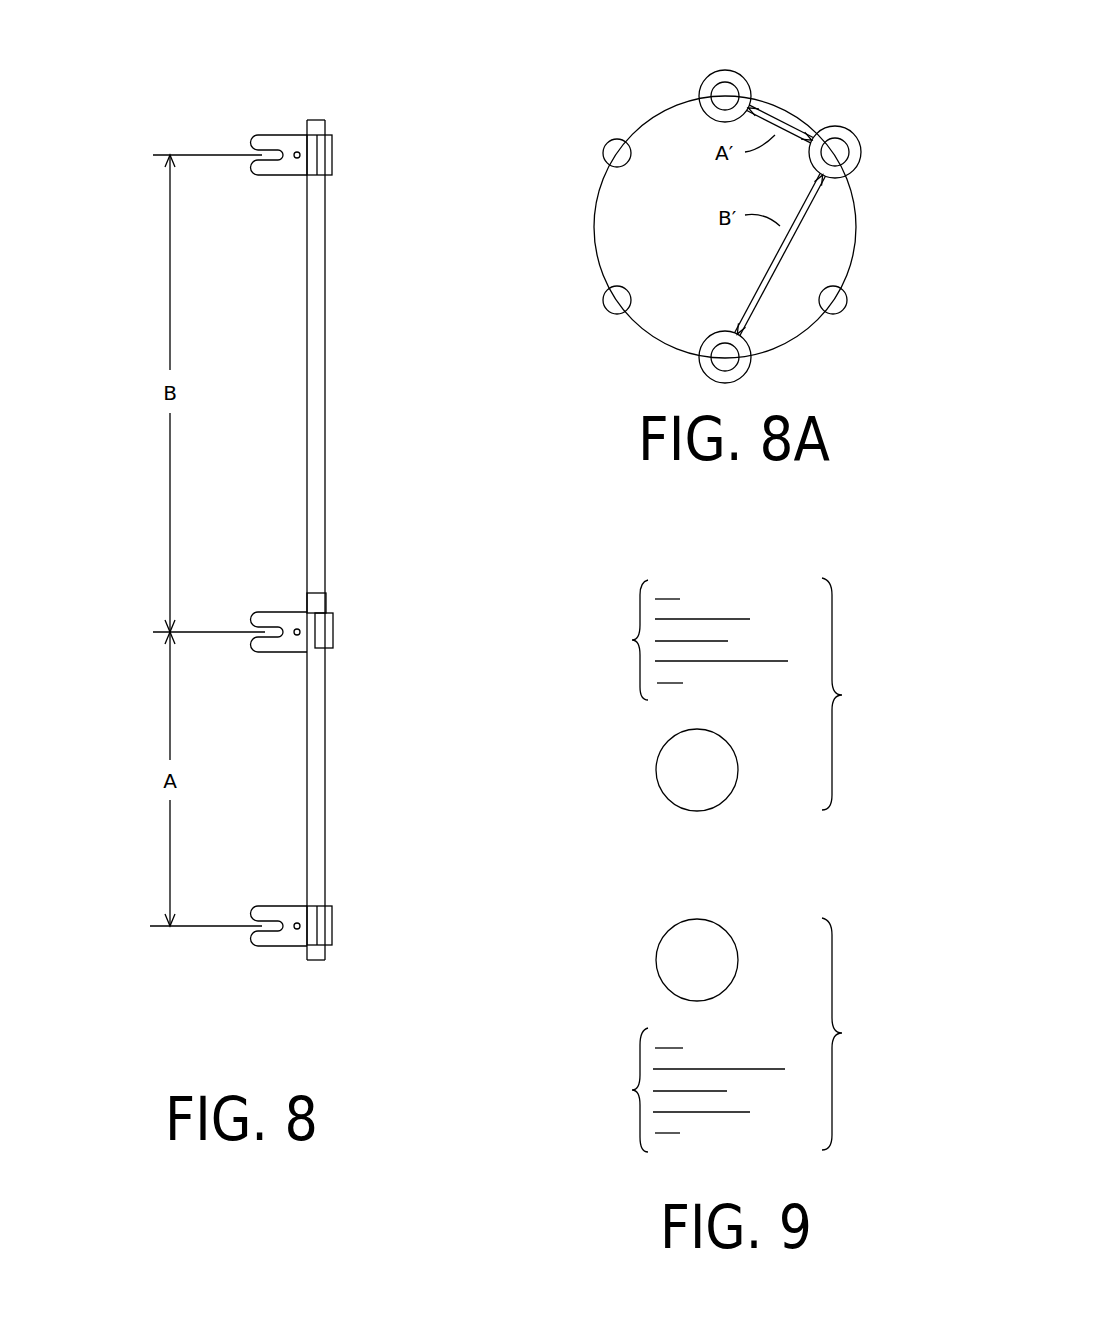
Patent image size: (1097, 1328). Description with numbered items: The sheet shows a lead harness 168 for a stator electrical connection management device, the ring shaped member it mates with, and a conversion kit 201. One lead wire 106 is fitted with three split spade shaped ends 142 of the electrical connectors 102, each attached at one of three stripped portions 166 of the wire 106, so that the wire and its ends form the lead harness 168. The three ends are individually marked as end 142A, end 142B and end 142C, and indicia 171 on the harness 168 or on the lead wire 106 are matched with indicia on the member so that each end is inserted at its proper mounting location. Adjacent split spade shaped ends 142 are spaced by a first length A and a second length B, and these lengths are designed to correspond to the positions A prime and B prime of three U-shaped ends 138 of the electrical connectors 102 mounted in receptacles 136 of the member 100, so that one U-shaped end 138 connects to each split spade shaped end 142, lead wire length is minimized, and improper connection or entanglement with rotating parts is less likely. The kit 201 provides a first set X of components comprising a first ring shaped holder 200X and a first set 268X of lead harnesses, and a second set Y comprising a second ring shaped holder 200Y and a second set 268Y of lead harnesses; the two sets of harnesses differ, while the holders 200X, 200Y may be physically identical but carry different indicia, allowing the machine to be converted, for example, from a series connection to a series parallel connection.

In FIG. 8A, the member 100 is at (640, 125).
In FIG. 8, the electrical connectors 102 is at (220, 975).
In FIG. 8, the lead wire 106 is at (325, 407).
In FIG. 8A, the receptacles 136 is at (700, 85).
In FIG. 8A, the U-shaped ends 138 is at (720, 80).
In FIG. 8, the split spade shaped end 142 is at (260, 890).
In FIG. 8, the end of harness 142A is at (283, 948).
In FIG. 8, the end of harness 142B is at (280, 655).
In FIG. 8, the end of harness 142C is at (296, 130).
In FIG. 8, the stripped portion 166 is at (327, 126).
In FIG. 8, the lead harness 168 is at (416, 266).
In FIG. 8A, the lead harness 168 is at (765, 120).
In FIG. 8, the indicia 171 is at (285, 165).
In FIG. 9, the kit 201 is at (598, 608).
In FIG. 9, the first ring shaped holder 200X is at (738, 768).
In FIG. 9, the second ring shaped holder 200Y is at (712, 922).
In FIG. 9, the first set of lead harnesses 268X is at (678, 640).
In FIG. 9, the second set of lead harnesses 268Y is at (676, 1090).